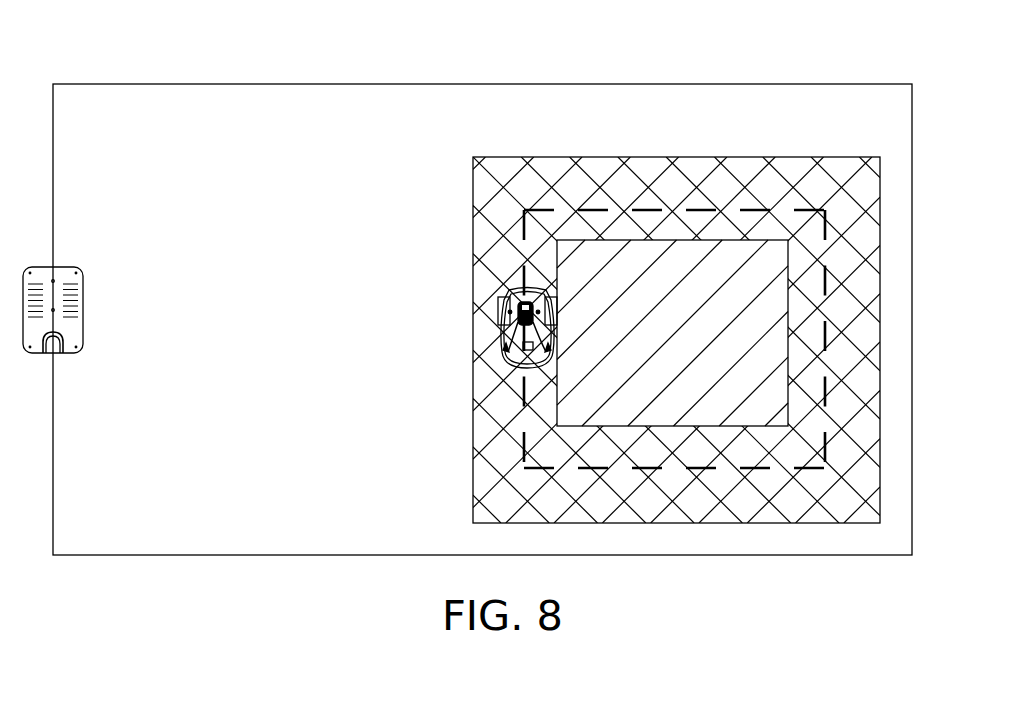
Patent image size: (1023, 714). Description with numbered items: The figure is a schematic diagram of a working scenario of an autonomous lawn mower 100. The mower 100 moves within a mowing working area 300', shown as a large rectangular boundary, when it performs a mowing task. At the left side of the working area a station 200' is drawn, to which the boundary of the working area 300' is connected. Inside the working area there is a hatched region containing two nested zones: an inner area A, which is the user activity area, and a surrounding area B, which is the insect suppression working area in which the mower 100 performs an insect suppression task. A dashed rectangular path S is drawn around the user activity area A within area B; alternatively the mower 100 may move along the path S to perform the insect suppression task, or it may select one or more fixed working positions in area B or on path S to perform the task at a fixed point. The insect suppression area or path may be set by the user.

The mowing working area 300' is at (502, 284).
The charging station 200' is at (107, 285).
The autonomous lawn mower 100 is at (500, 289).
The path S is at (812, 212).
The user activity area A is at (672, 333).
The insect suppression working area B is at (676, 340).